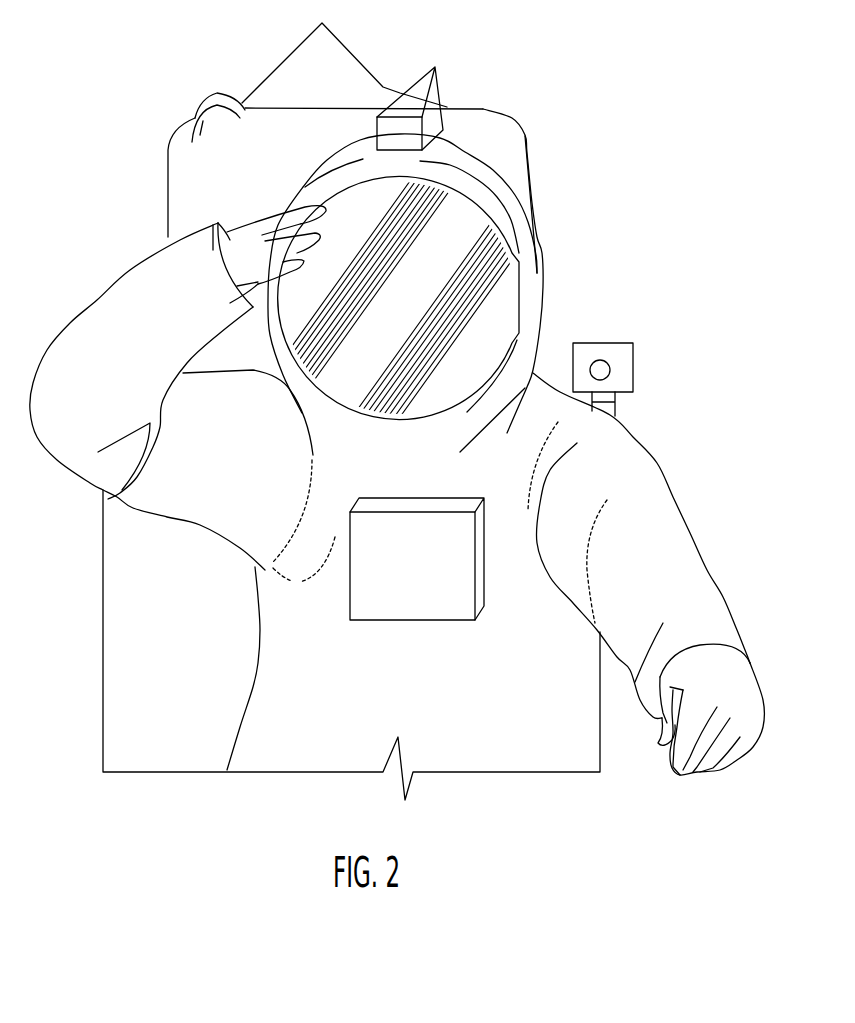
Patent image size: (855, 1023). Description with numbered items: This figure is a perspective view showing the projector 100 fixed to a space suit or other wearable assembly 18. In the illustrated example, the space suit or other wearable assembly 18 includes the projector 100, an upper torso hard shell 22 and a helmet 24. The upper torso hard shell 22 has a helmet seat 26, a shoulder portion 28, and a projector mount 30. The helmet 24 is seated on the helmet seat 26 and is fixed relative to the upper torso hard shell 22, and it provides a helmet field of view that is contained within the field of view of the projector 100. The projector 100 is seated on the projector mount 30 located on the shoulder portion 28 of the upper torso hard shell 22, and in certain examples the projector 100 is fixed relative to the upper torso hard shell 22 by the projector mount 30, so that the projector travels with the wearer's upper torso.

The projector 100 is at (663, 353).
The space suit or other wearable assembly 18 is at (158, 625).
The upper torso hard shell 22 is at (213, 488).
The helmet 24 is at (443, 180).
The helmet seat 26 is at (467, 412).
The shoulder portion 28 is at (603, 429).
The projector mount 30 is at (617, 411).